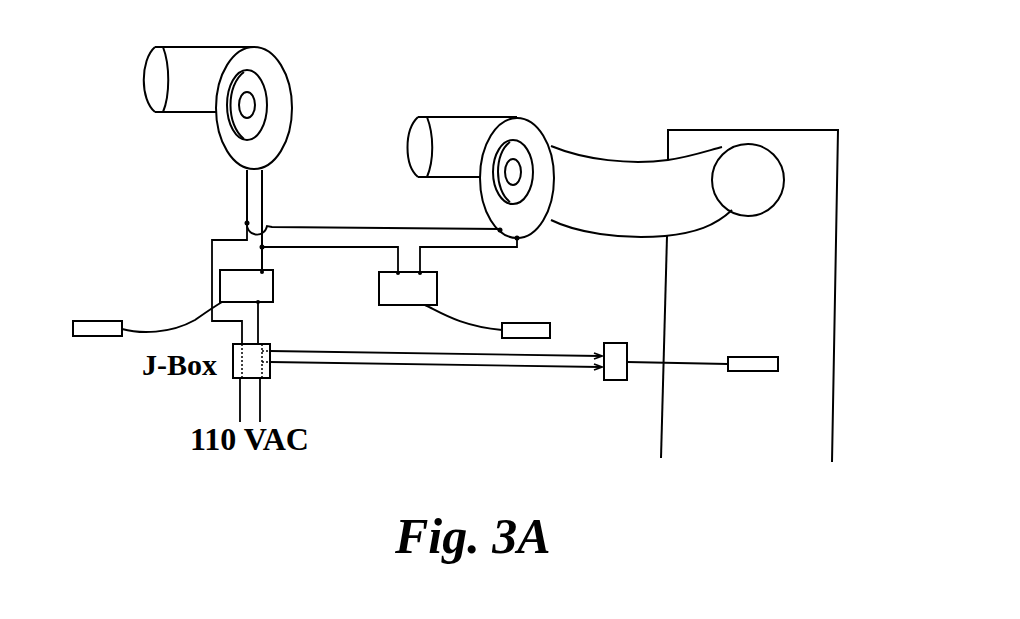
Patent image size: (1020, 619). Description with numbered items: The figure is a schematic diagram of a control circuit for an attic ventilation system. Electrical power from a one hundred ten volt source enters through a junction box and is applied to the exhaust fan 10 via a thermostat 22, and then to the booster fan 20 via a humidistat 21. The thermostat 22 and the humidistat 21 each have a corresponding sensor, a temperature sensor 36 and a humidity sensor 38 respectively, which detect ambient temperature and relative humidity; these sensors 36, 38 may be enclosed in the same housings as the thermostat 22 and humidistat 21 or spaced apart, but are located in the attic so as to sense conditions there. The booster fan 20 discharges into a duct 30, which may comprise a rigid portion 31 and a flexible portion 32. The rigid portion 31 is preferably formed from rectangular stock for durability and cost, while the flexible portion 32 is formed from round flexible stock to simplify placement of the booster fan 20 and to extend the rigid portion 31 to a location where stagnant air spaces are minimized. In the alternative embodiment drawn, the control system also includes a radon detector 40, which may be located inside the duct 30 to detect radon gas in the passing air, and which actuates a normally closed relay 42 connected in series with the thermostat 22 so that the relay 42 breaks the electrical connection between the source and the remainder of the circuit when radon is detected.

The exhaust fan 10 is at (140, 48).
The booster fan 20 is at (410, 116).
The humidistat 21 is at (441, 285).
The thermostat 22 is at (276, 288).
The duct 30 is at (836, 262).
The rigid portion 31 is at (808, 155).
The flexible portion 32 is at (630, 153).
The temperature sensor 36 is at (102, 318).
The humidity sensor 38 is at (540, 320).
The radon detector 40 is at (756, 357).
The normally closed relay 42 is at (615, 340).